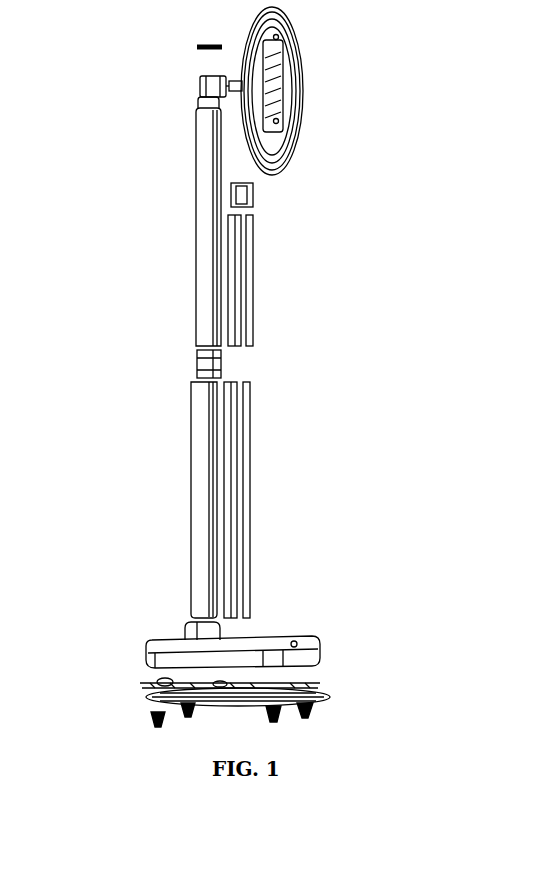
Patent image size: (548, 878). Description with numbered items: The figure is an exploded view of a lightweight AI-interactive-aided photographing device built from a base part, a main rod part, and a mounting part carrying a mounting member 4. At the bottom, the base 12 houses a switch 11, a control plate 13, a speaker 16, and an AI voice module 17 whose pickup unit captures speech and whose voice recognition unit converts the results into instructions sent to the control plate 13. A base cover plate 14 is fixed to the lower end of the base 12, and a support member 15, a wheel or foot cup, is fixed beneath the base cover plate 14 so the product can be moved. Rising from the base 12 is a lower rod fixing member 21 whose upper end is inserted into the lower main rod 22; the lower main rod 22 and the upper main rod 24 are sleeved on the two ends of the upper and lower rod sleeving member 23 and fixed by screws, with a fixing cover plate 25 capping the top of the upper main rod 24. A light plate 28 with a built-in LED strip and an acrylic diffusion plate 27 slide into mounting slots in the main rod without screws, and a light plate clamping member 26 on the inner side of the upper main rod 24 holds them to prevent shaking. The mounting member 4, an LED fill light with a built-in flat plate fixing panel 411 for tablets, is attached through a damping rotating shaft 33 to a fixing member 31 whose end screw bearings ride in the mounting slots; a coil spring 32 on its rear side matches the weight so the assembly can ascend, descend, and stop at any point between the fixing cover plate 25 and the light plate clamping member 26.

The mounting member 4 is at (306, 41).
The flat plate fixing panel 411 is at (305, 142).
The damping rotating shaft 33 is at (256, 85).
The coil spring 32 is at (197, 86).
The fixing member 31 is at (204, 100).
The fixing cover plate 25 is at (193, 47).
The upper main rod 24 is at (194, 260).
The upper and lower rod sleeving member 23 is at (195, 363).
The lower main rod 22 is at (189, 494).
The light plate clamping member 26 is at (264, 201).
The acrylic diffusion plate 27 is at (252, 430).
The light plate 28 is at (243, 332).
The lower rod fixing member 21 is at (186, 628).
The switch 11 is at (272, 640).
The base 12 is at (298, 643).
The control plate 13 is at (264, 685).
The base cover plate 14 is at (320, 700).
The speaker 16 is at (154, 682).
The AI voice module 17 is at (213, 681).
The support member 15 is at (146, 718).